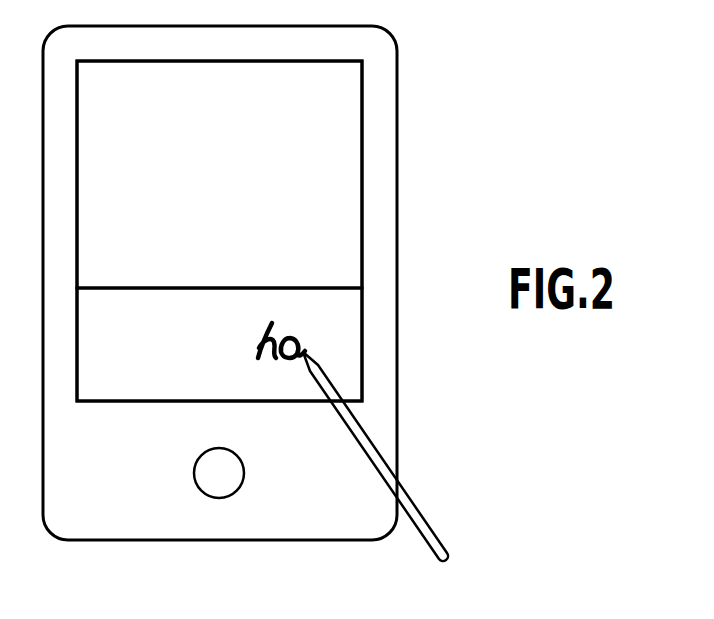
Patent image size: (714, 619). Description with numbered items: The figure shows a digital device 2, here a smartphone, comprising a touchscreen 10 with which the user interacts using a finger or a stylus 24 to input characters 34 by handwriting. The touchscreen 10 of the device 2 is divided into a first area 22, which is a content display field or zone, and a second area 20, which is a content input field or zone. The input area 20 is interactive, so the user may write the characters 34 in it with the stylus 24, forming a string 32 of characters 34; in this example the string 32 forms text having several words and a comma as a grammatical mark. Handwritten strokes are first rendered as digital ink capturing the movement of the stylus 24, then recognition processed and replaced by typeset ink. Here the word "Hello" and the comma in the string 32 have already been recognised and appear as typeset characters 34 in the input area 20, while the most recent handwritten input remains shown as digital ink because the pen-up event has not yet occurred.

The digital device 2 is at (408, 120).
The touchscreen 10 is at (362, 182).
The first area 22 is at (333, 245).
The second area 20 is at (333, 343).
The string of characters 32 is at (142, 102).
The characters 34 is at (152, 363).
The stylus 24 is at (358, 438).